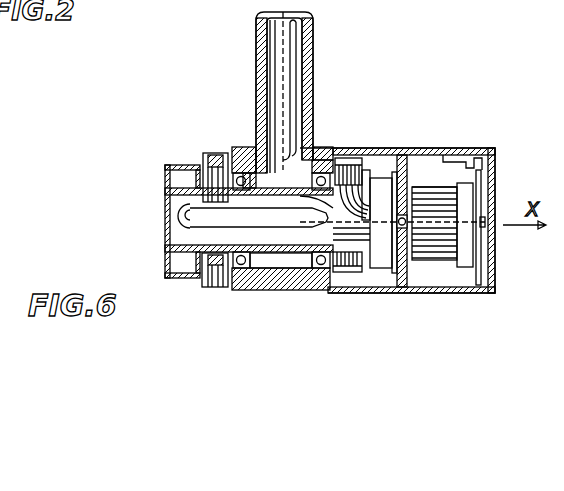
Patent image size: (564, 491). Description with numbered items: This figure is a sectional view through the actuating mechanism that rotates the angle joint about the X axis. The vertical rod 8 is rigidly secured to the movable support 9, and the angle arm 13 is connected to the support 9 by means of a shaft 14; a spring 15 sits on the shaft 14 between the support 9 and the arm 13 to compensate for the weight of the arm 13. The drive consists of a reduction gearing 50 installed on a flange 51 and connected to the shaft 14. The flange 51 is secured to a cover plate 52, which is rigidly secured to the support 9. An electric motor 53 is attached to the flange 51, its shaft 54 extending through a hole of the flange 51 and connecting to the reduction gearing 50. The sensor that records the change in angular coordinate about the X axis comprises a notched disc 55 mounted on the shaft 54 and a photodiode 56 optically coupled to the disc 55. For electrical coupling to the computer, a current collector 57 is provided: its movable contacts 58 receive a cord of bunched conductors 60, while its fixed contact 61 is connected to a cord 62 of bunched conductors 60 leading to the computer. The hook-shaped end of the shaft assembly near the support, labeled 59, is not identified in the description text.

The vertical rod 8 is at (313, 34).
The cord 62 is at (296, 68).
The movable support 9 is at (287, 282).
The angle arm 13 is at (170, 180).
The shaft 14 is at (172, 242).
The spring 15 is at (213, 153).
The hooked shaft 59 is at (174, 211).
The bunched conductors 60 is at (327, 150).
The current collector 57 is at (334, 150).
The fixed contact 61 is at (360, 150).
The movable contacts 58 is at (378, 150).
The flange 51 is at (403, 148).
The photodiode 56 is at (481, 150).
The cover plate 52 is at (496, 176).
The notched disc 55 is at (480, 190).
The shaft 54 is at (406, 222).
The electric motor 53 is at (427, 247).
The reduction gearing 50 is at (384, 274).